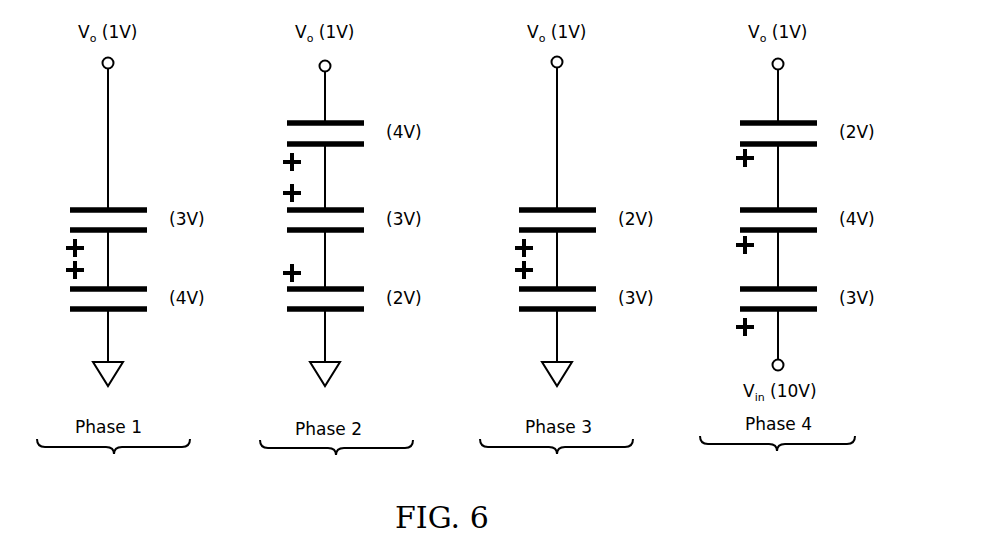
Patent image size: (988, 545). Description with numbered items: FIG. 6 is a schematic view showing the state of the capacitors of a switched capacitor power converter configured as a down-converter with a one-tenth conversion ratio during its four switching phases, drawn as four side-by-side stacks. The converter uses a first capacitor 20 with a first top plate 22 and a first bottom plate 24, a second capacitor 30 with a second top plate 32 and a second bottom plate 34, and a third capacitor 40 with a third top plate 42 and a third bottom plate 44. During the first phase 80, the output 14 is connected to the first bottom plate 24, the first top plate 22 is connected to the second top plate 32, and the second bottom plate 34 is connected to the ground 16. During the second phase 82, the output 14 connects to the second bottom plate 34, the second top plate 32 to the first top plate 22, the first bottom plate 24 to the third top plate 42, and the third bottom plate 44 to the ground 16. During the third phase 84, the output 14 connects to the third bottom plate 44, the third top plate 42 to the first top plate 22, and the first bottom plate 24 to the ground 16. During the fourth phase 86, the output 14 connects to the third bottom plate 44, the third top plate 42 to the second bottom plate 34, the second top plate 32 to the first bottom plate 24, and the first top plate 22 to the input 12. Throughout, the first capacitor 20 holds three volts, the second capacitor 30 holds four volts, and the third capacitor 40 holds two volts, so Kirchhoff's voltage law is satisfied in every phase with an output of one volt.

The input 12 is at (783, 363).
The output 14 is at (113, 61).
The ground 16 is at (116, 372).
The first capacitor 20 is at (66, 215).
The first top plate 22 is at (130, 234).
The first bottom plate 24 is at (130, 207).
The second capacitor 30 is at (66, 294).
The second top plate 32 is at (130, 286).
The second bottom plate 34 is at (130, 313).
The third capacitor 40 is at (283, 294).
The third top plate 42 is at (347, 286).
The third bottom plate 44 is at (347, 313).
The first phase 80 is at (114, 454).
The second phase 82 is at (336, 455).
The third phase 84 is at (557, 454).
The fourth phase 86 is at (777, 451).